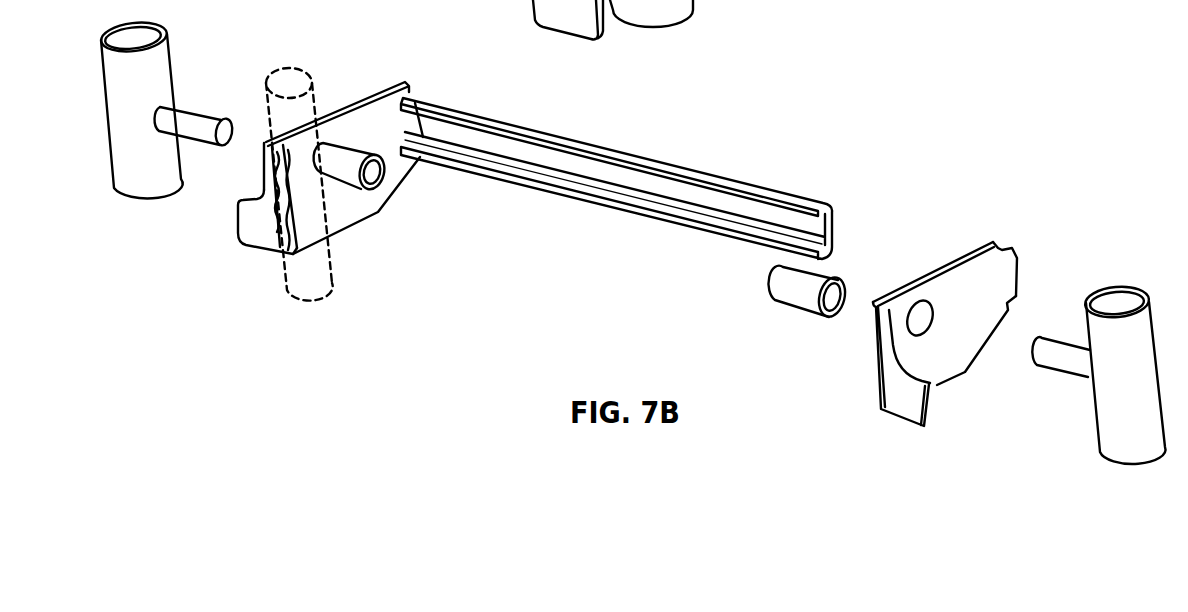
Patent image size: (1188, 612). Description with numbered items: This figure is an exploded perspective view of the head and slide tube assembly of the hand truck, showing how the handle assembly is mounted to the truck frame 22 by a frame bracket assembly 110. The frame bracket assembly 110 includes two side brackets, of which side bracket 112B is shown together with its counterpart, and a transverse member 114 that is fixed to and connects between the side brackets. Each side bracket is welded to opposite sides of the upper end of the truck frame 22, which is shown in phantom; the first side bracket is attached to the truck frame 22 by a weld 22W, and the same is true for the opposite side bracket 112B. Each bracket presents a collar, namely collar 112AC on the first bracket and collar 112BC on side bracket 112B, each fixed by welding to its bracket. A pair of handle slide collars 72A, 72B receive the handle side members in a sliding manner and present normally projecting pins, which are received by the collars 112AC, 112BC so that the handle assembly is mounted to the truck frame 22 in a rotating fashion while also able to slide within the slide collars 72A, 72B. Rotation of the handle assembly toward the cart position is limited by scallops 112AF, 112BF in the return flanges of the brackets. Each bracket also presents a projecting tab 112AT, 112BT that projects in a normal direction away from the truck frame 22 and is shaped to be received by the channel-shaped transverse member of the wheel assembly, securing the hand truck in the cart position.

The handle slide collar 72A is at (168, 68).
The handle slide collar 72B is at (1107, 432).
The truck frame 22 is at (311, 89).
The weld 22W is at (297, 228).
The frame bracket assembly 110 is at (597, 233).
The projecting tab 112AT is at (409, 89).
The scallop 112AF is at (259, 199).
The collar 112AC is at (355, 189).
The transverse member 114 is at (698, 172).
The side bracket 112B is at (922, 274).
The projecting tab 112BT is at (1013, 261).
The collar 112BC is at (790, 306).
The scallop 112BF is at (903, 375).